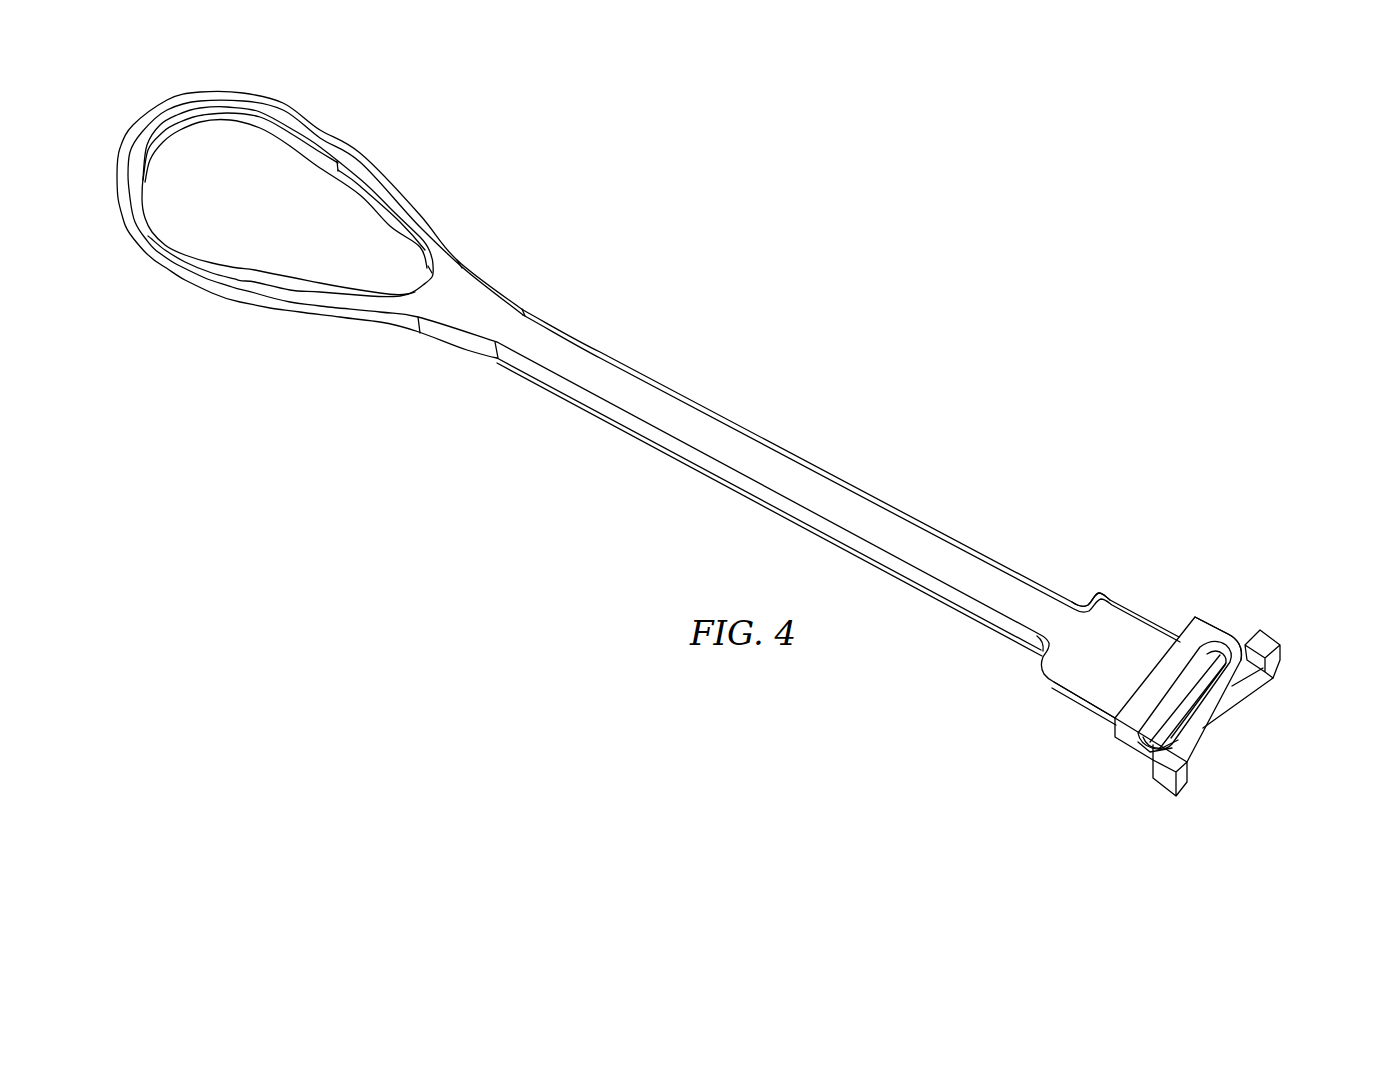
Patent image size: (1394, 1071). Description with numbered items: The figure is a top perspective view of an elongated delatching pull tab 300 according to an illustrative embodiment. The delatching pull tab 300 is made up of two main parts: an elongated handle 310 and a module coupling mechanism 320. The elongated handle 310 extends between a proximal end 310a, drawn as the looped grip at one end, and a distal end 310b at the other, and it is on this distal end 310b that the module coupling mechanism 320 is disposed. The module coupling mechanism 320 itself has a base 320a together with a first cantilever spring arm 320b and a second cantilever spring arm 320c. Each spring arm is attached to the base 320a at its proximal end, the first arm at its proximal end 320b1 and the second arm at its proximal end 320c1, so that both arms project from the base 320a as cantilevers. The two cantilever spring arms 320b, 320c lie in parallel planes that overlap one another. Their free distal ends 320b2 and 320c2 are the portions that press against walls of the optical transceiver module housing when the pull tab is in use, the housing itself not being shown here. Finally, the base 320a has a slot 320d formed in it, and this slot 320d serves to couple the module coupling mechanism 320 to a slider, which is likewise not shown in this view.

The elongated delatching pull tab 300 is at (883, 402).
The elongated handle 310 is at (740, 450).
The proximal end 310a is at (282, 298).
The distal end 310b is at (1086, 693).
The module coupling mechanism 320 is at (1169, 557).
The base 320a is at (1109, 592).
The first cantilever spring arm 320b is at (1212, 732).
The proximal end of first cantilever spring arm 320b1 is at (1218, 635).
The distal end of first cantilever spring arm 320b2 is at (1164, 780).
The second cantilever spring arm 320c is at (1245, 696).
The proximal end of second cantilever spring arm 320c1 is at (1138, 750).
The distal end of second cantilever spring arm 320c2 is at (1268, 644).
The slot 320d is at (1152, 664).